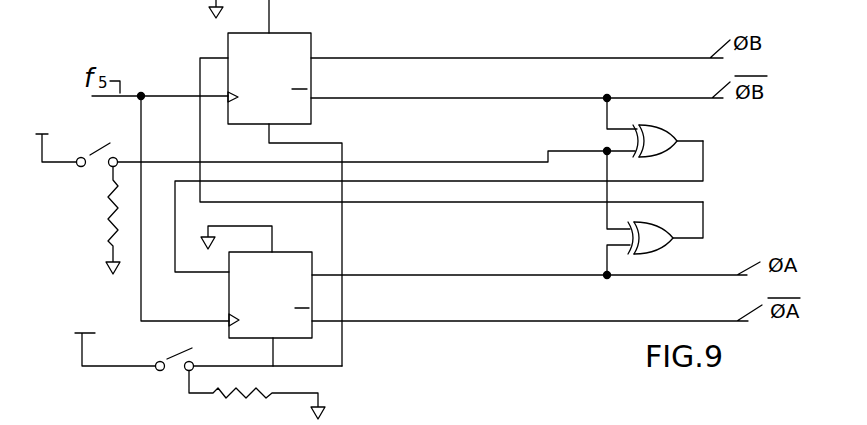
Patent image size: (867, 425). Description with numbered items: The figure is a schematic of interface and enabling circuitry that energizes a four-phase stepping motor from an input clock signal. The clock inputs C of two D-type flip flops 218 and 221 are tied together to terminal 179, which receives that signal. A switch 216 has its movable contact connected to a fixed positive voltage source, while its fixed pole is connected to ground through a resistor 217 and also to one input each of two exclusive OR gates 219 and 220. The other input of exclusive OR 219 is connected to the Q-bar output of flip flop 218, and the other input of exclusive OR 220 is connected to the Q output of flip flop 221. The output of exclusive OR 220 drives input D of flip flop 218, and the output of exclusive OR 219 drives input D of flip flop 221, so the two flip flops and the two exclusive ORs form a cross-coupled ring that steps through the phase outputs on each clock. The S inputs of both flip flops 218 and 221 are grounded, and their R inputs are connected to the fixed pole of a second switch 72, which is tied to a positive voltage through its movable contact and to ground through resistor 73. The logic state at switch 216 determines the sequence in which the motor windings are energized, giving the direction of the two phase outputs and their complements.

The terminal 179 is at (152, 83).
The D-type flip flop 218 is at (287, 35).
The D-type flip flop 221 is at (290, 254).
The exclusive OR 219 is at (661, 137).
The exclusive OR 220 is at (657, 212).
The switch 216 is at (97, 153).
The resistor 217 is at (110, 215).
The switch 72 is at (182, 350).
The resistor 73 is at (227, 396).